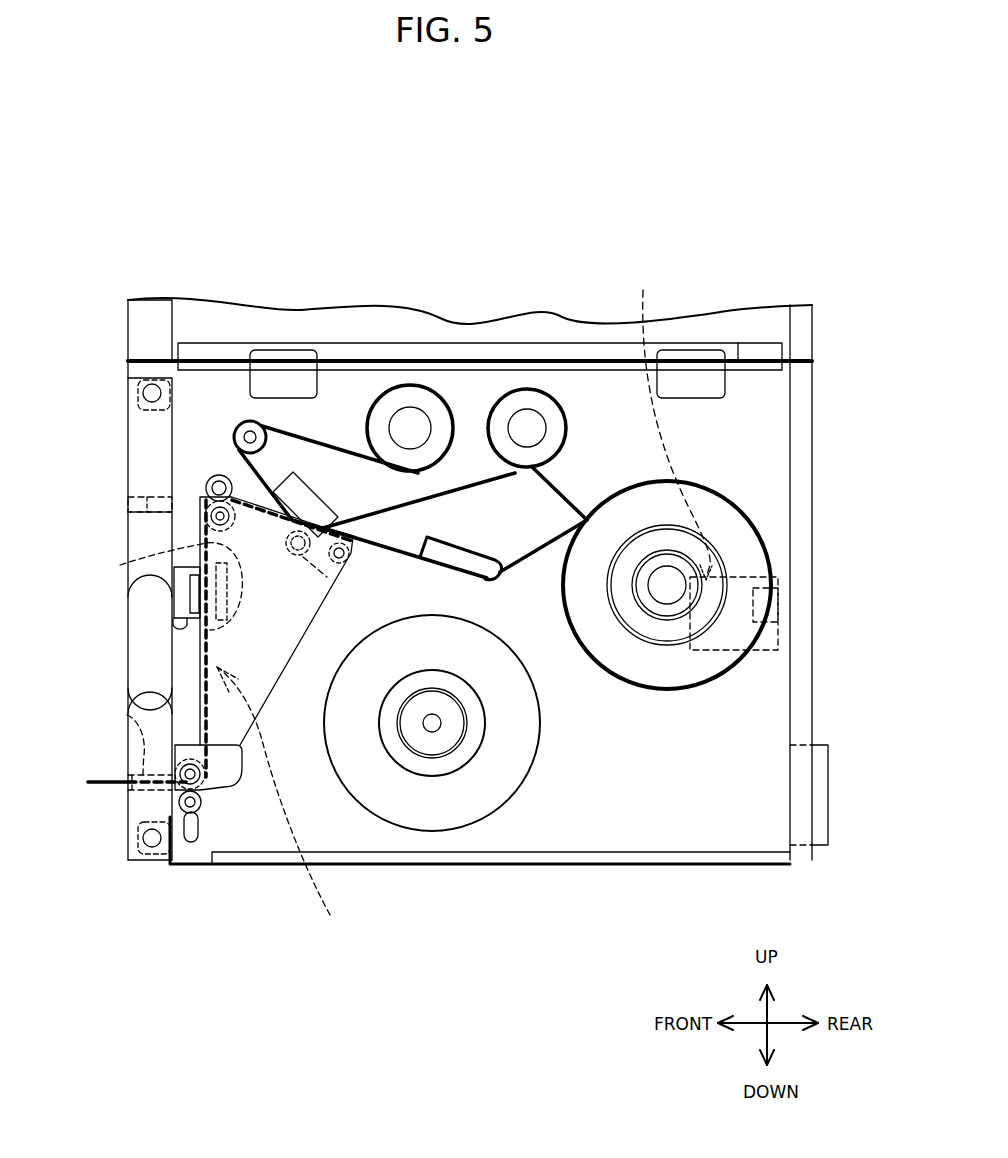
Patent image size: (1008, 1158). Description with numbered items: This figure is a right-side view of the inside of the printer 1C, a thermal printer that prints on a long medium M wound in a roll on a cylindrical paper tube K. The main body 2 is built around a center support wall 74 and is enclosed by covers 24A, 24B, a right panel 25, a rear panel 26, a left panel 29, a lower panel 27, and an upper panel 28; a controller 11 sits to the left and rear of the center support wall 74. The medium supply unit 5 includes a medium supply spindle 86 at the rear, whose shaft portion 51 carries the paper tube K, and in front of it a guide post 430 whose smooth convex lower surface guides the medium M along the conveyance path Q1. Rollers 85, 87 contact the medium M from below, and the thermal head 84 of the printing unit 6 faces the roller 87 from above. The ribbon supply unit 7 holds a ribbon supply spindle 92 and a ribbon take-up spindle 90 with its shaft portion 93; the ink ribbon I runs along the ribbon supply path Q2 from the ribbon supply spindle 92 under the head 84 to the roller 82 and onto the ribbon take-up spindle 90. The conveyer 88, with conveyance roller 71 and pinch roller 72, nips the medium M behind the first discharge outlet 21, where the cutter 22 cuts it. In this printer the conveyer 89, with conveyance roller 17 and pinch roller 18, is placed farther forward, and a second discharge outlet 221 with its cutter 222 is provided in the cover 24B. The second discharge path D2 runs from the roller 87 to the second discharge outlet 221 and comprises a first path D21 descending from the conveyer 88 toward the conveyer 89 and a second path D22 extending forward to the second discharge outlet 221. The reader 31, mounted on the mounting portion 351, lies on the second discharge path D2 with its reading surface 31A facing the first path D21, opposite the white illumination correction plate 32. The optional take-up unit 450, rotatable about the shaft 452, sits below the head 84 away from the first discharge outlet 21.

The printer 1C is at (473, 170).
The main body 2 is at (710, 268).
The medium supply unit 5 is at (742, 466).
The printing unit 6 is at (310, 477).
The ribbon supply unit 7 is at (490, 378).
The controller 11 is at (671, 425).
The conveyance roller 17 is at (198, 822).
The pinch roller 18 is at (192, 842).
The first discharge outlet 21 is at (130, 510).
The cutter 22 is at (128, 497).
The cover 24A is at (150, 643).
The cover 24B is at (155, 800).
The right panel 25 is at (565, 332).
The rear panel 26 is at (812, 538).
The lower panel 27 is at (660, 868).
The upper panel 28 is at (733, 357).
The left panel 29 is at (733, 415).
The reader 31 is at (186, 596).
The reading surface 31A is at (130, 660).
The illumination correction plate 32 is at (128, 563).
The shaft portion 51 is at (667, 585).
The conveyance roller 71 is at (219, 475).
The pinch roller 72 is at (211, 516).
The center support wall 74 is at (603, 753).
The roller 82 is at (250, 421).
The thermal head 84 is at (308, 490).
The roller 85 is at (340, 530).
The medium supply spindle 86 is at (740, 540).
The roller 87 is at (344, 563).
The conveyer 88 is at (203, 487).
The conveyer 89 is at (212, 787).
The ribbon take-up spindle 90 is at (408, 427).
The ribbon supply spindle 92 is at (553, 387).
The shaft portion 93 is at (420, 372).
The second discharge outlet 221 is at (128, 790).
The cutter 222 is at (127, 715).
The mounting portion 351 is at (178, 623).
The guide post 430 is at (455, 556).
The take-up unit 450 is at (448, 755).
The shaft 452 is at (433, 725).
The second discharge path D2 is at (281, 804).
The first path D21 is at (265, 591).
The second path D22 is at (106, 780).
The ink ribbon I is at (495, 487).
The paper tube K is at (712, 628).
The medium M is at (294, 638).
The conveyance path Q1 is at (566, 545).
The ribbon supply path Q2 is at (442, 500).